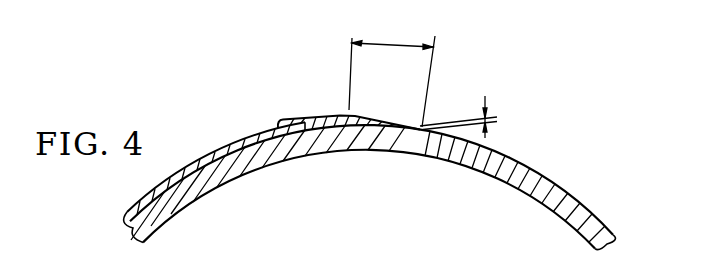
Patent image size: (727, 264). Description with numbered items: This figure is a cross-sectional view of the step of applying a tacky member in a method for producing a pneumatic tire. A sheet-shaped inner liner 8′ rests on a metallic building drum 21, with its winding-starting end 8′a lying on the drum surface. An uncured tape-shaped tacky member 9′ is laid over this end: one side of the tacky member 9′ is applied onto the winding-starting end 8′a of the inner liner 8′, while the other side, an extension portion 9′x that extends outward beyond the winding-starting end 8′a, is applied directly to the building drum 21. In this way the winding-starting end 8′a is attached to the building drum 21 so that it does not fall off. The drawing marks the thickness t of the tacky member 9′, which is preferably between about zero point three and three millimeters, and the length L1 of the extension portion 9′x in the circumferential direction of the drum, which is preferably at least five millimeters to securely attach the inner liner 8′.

The building drum 21 is at (583, 206).
The inner liner 8′ is at (213, 150).
The winding-starting end 8′a is at (304, 131).
The tacky member 9′ is at (308, 112).
The extension portion 9′x is at (388, 130).
The length of the extension portion L1 is at (392, 74).
The thickness of the tacky member t is at (494, 117).